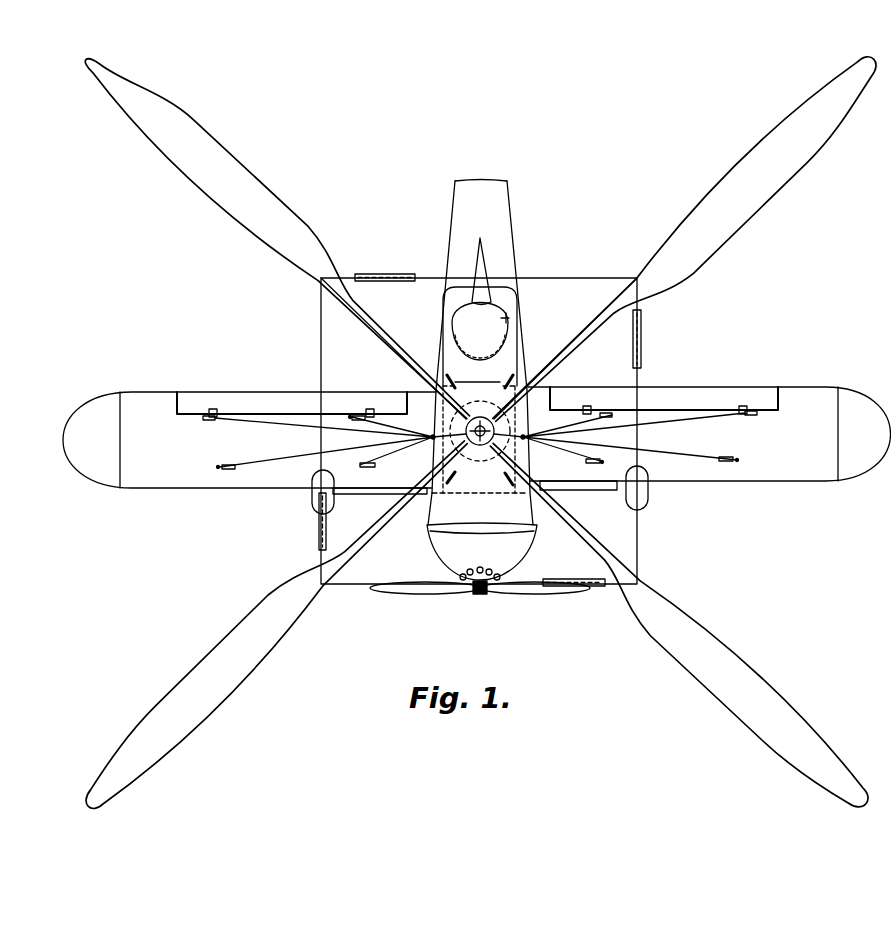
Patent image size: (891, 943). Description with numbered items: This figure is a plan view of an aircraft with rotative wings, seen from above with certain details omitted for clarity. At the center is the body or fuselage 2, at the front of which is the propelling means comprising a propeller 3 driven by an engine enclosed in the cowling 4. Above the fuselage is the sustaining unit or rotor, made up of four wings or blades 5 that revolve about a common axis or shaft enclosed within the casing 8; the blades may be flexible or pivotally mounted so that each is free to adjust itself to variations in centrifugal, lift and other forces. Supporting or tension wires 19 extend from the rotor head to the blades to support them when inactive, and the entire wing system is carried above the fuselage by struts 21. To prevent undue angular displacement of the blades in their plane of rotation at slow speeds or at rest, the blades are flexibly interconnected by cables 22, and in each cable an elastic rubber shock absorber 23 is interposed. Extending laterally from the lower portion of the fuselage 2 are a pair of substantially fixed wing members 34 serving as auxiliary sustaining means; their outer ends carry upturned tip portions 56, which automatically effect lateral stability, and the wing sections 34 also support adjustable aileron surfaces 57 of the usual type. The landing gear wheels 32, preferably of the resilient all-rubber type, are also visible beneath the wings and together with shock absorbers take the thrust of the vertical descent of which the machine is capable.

The body or fuselage 2 is at (480, 353).
The propeller 3 is at (533, 591).
The cowling 4 is at (482, 551).
The wings or blades 5 is at (480, 433).
The casing 8 is at (483, 448).
The supporting or tension wires 19 is at (585, 327).
The struts 21 is at (506, 392).
The cables 22 is at (583, 277).
The rubber shock absorber 23 is at (389, 277).
The wheels 32 is at (312, 499).
The fixed wing members 34 is at (477, 440).
The upturned tip portions 56 is at (477, 437).
The aileron surfaces 57 is at (268, 396).